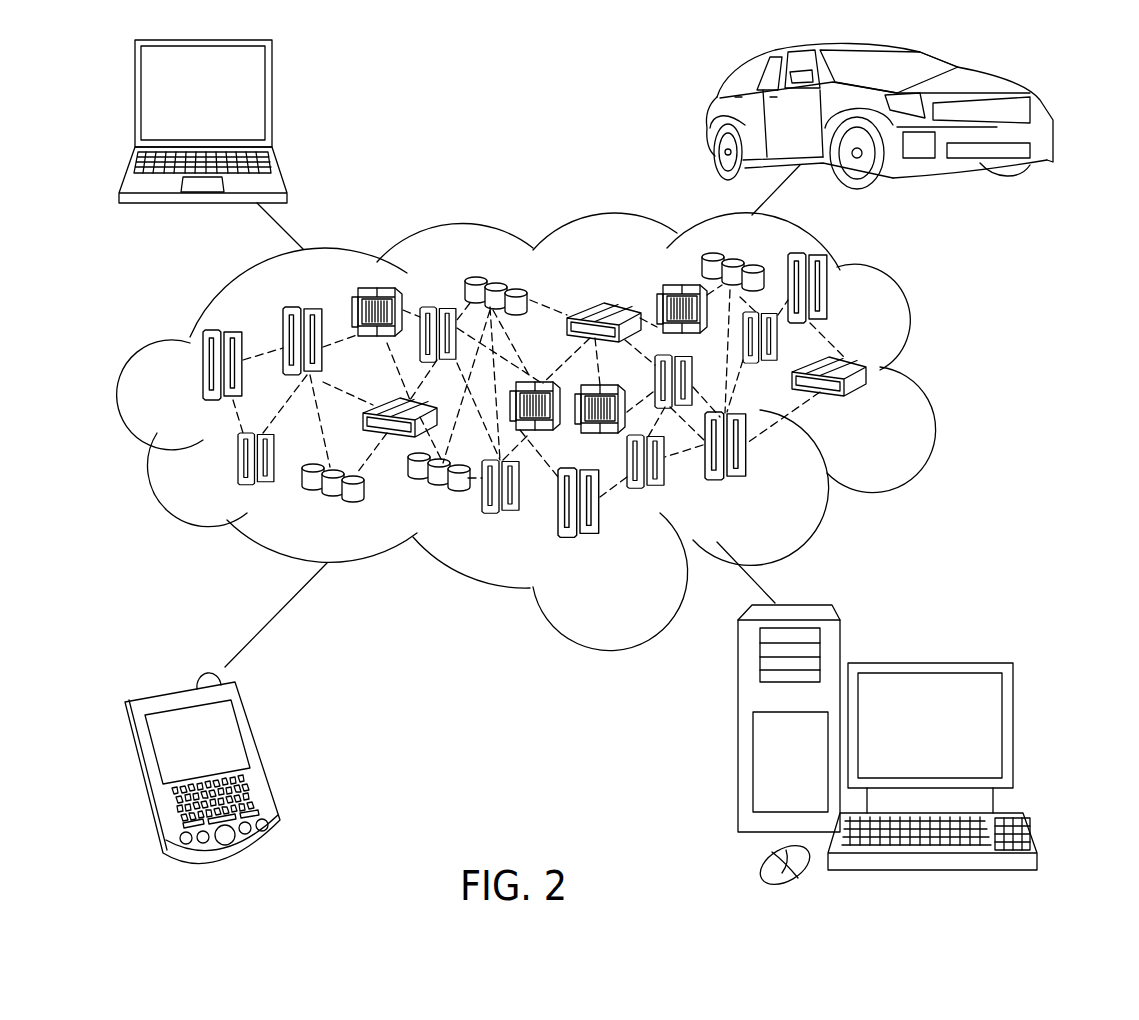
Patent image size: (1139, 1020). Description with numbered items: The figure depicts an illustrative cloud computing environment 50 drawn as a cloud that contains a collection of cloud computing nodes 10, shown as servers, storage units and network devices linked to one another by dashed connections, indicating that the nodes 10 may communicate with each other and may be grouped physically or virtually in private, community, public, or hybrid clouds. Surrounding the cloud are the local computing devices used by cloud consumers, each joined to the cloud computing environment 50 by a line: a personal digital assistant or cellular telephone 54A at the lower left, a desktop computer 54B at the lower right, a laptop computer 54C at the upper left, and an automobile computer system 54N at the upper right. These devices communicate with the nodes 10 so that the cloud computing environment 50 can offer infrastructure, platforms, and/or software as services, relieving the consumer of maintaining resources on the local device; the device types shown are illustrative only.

The cloud computing node 10 is at (871, 404).
The cloud computing environment 50 is at (927, 373).
The personal digital assistant or cellular telephone 54A is at (262, 756).
The desktop computer 54B is at (928, 662).
The laptop computer 54C is at (272, 101).
The automobile computer system 54N is at (712, 121).